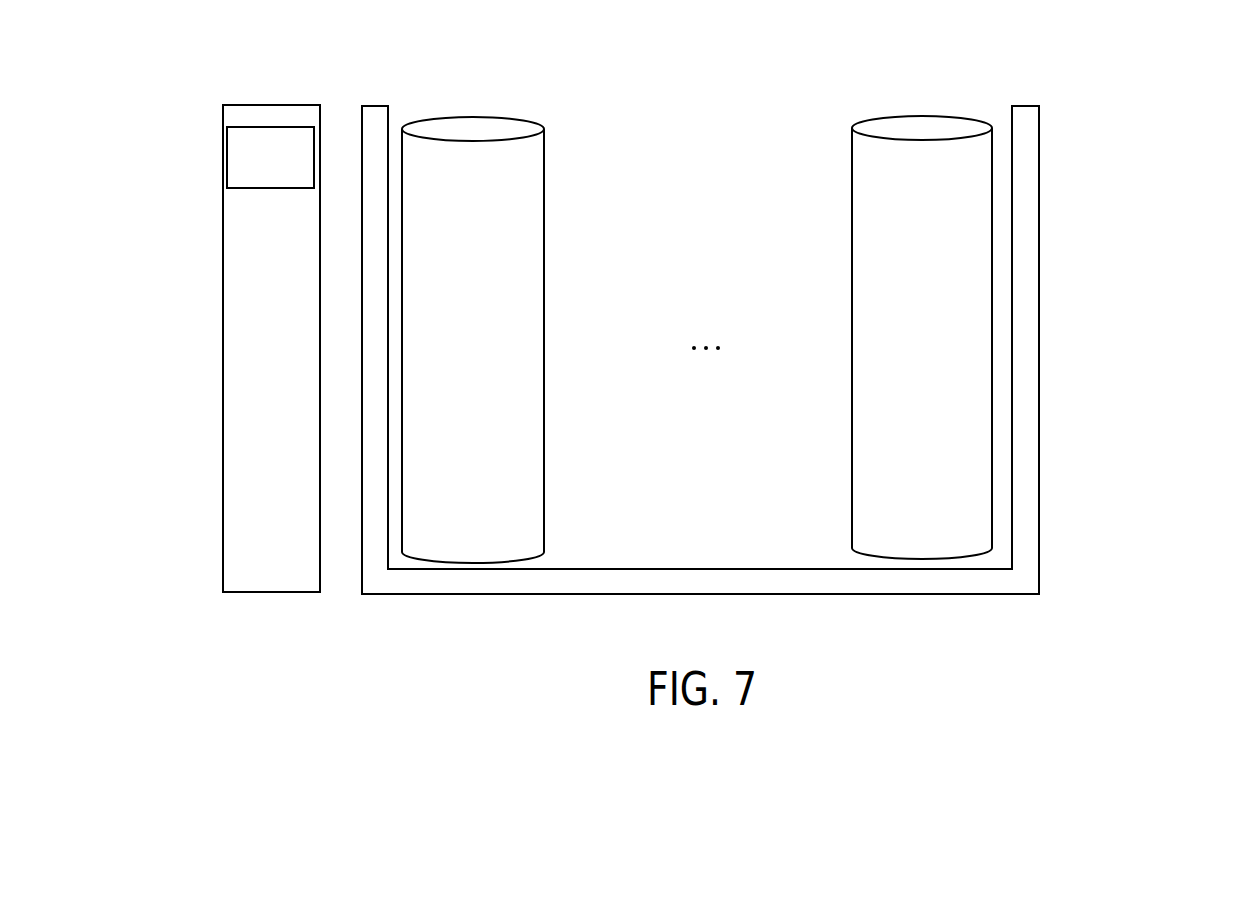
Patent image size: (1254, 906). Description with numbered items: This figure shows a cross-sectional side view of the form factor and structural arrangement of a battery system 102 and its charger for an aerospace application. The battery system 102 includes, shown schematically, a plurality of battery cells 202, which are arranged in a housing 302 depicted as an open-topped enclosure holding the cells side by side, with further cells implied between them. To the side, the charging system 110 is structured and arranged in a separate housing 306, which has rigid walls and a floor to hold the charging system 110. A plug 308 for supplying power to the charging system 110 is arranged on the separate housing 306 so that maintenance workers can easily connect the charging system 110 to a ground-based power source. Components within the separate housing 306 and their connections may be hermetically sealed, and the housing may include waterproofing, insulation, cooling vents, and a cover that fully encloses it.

The battery system 102 is at (1170, 101).
The charging system 110 is at (243, 228).
The battery cells 202 is at (697, 339).
The housing 302 is at (1028, 502).
The separate housing 306 is at (257, 510).
The plug 308 is at (270, 157).